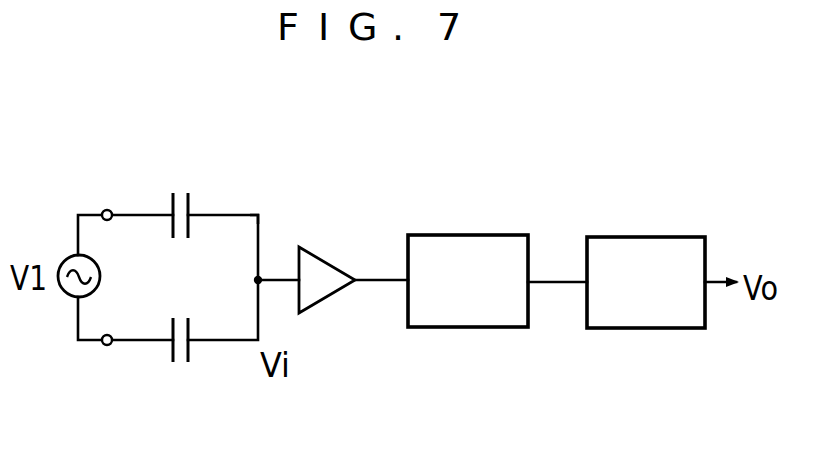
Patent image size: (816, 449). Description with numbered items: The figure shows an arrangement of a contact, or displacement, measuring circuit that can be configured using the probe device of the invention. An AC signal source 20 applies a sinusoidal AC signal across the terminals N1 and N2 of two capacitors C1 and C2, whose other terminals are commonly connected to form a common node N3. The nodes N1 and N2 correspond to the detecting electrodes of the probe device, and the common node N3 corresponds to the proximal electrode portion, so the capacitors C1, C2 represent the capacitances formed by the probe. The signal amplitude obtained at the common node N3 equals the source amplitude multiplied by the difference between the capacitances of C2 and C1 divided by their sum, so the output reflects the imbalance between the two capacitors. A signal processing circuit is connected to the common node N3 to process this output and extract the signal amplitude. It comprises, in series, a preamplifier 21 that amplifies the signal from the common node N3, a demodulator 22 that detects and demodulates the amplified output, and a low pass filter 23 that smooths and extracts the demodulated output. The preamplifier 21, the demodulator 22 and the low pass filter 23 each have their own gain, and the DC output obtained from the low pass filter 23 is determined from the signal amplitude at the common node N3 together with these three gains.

The AC signal source 20 is at (68, 260).
The preamplifier 21 is at (330, 262).
The demodulator 22 is at (476, 235).
The low pass filter 23 is at (650, 237).
The terminal N1 is at (108, 210).
The terminal N2 is at (107, 346).
The common node N3 is at (244, 215).
The capacitor C1 is at (179, 197).
The capacitor C2 is at (179, 360).